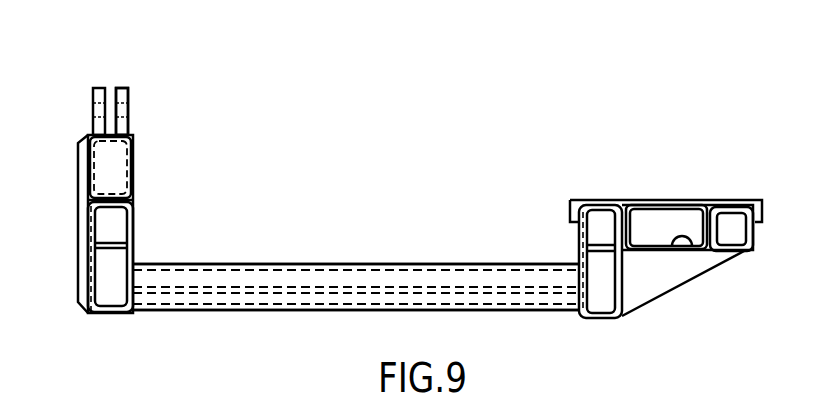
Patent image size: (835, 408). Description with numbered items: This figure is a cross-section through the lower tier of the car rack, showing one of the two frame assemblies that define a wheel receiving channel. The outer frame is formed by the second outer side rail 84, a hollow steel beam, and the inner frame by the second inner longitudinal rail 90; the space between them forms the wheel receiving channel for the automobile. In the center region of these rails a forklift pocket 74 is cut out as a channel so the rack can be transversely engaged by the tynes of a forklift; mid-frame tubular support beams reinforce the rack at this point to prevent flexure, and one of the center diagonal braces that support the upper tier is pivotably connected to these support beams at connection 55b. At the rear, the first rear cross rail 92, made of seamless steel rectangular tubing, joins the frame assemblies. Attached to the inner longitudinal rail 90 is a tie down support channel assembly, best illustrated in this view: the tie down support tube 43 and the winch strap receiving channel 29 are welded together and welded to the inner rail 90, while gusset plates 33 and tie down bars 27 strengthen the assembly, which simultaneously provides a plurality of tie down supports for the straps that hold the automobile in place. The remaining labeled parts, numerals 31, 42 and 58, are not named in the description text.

The tie down bar 27 is at (742, 202).
The winch strap receiving channel 29 is at (672, 246).
The compartment 31 is at (704, 205).
The gusset plate 33 is at (640, 306).
The upper compartment 42 is at (100, 172).
The tie down support tube 43 is at (753, 240).
The pivot connection of center brace 55b is at (122, 86).
The terminal pins 58 is at (128, 105).
The forklift pocket 74 is at (283, 290).
The second outer side rail 84 is at (88, 268).
The second inner longitudinal rail 90 is at (587, 207).
The first rear cross rail 92 is at (465, 264).